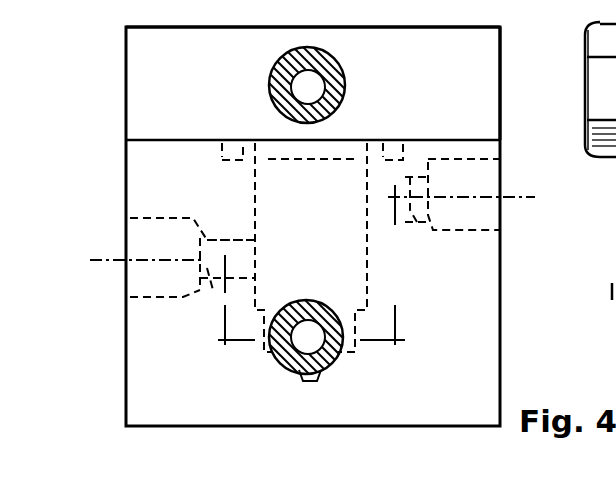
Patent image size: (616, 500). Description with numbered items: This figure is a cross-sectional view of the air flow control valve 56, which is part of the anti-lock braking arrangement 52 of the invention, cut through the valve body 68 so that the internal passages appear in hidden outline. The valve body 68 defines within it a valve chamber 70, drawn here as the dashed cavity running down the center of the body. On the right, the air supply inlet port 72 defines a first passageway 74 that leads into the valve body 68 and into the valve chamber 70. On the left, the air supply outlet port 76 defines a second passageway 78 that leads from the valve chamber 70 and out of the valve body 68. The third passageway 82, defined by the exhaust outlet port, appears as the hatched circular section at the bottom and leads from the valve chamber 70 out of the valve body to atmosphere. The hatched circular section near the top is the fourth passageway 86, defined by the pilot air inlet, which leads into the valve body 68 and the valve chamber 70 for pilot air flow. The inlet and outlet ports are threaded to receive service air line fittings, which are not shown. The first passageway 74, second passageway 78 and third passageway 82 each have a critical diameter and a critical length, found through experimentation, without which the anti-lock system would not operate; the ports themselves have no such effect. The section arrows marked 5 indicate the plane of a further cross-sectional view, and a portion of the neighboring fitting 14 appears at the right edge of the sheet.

The valve assembly 52 is at (526, 87).
The air flow control valve 56 is at (445, 25).
The valve body 68 is at (500, 345).
The valve chamber 70 is at (367, 293).
The air supply inlet port 72 is at (468, 163).
The first passageway 74 is at (393, 174).
The air supply outlet port 76 is at (138, 222).
The second passageway 78 is at (250, 242).
The third passageway 82 is at (322, 356).
The fourth passageway 86 is at (311, 76).
The section line 5- 5 is at (102, 250).
The nut 14 is at (600, 116).